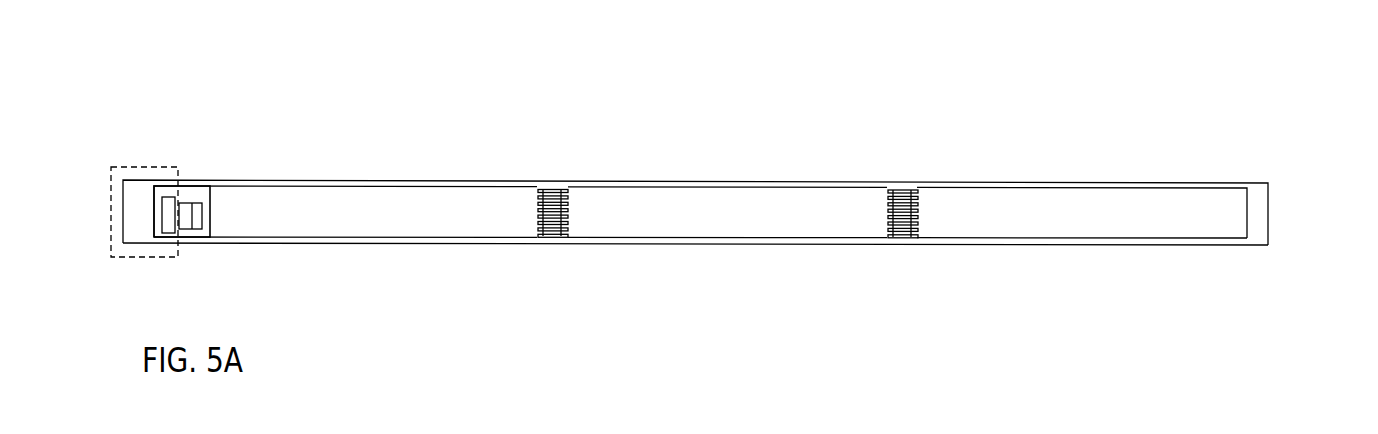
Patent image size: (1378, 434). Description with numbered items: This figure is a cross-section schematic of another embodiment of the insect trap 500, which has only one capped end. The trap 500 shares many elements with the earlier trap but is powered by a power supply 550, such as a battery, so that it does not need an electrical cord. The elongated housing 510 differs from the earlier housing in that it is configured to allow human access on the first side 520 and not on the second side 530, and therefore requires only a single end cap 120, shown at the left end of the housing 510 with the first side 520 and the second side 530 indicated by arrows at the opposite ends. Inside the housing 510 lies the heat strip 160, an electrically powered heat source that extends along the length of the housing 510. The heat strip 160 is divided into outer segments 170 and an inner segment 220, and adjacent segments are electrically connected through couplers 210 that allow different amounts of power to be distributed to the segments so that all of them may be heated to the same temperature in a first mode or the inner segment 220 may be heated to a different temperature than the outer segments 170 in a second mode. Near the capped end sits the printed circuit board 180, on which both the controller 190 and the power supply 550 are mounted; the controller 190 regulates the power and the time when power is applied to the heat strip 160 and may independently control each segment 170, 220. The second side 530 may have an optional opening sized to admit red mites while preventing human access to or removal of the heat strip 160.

The trap 500 is at (1125, 50).
The housing 510 is at (952, 181).
The first side 520 is at (86, 198).
The second side 530 is at (1273, 217).
The power supply 550 is at (172, 233).
The end cap 120 is at (148, 167).
The heat strip 160 is at (338, 187).
The outer segments 170 is at (332, 238).
The printed circuit board 180 is at (189, 191).
The controller 190 is at (198, 205).
The couplers 210 is at (550, 187).
The inner segment 220 is at (668, 238).